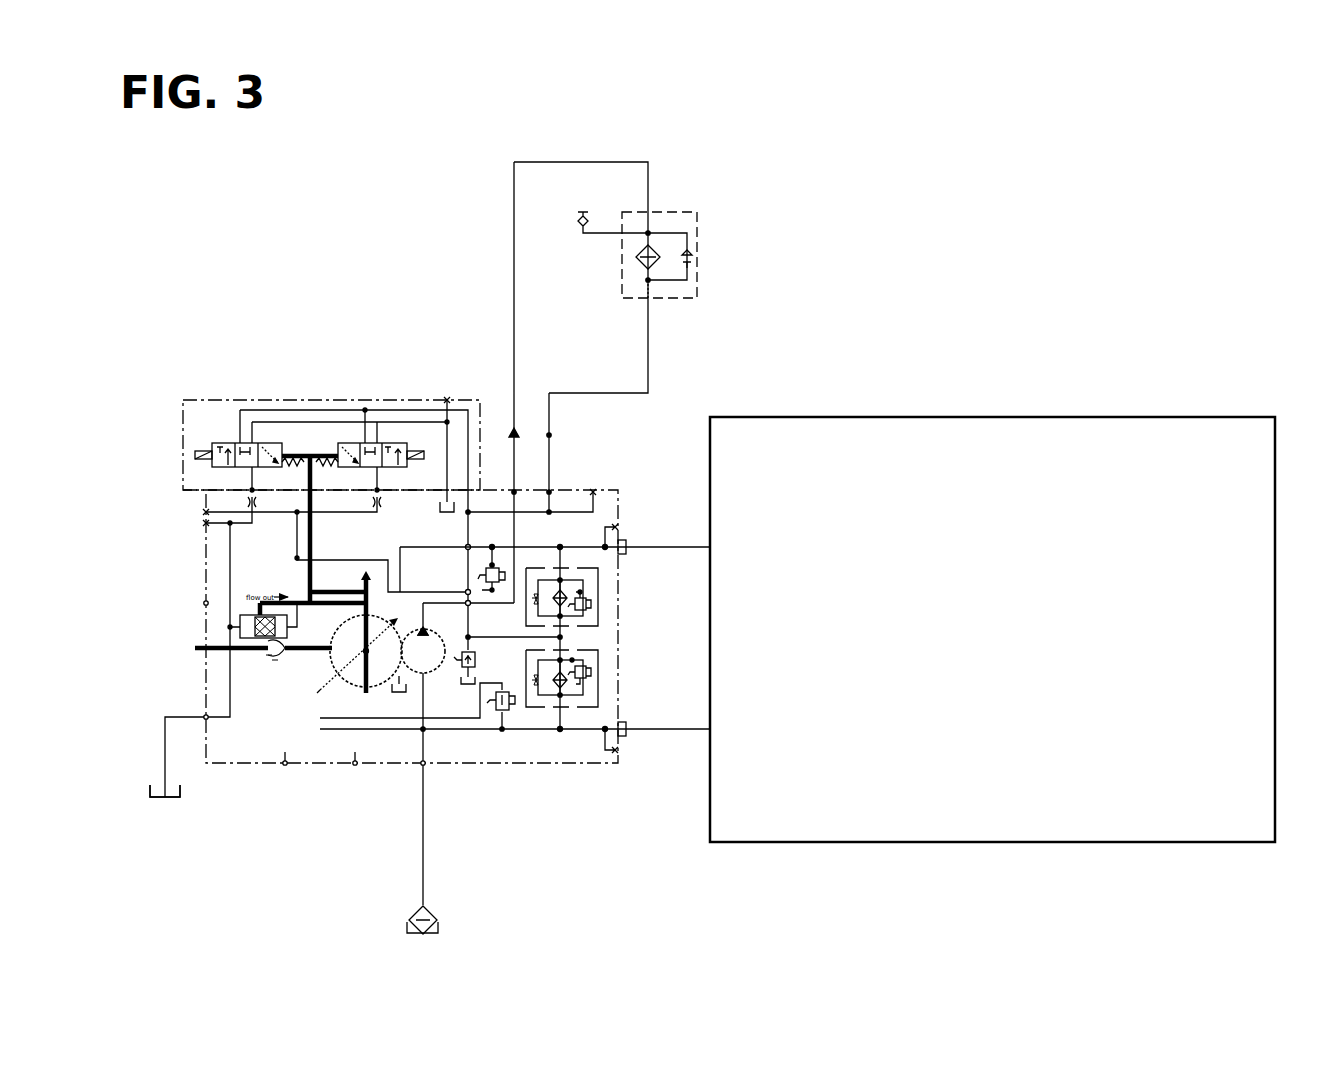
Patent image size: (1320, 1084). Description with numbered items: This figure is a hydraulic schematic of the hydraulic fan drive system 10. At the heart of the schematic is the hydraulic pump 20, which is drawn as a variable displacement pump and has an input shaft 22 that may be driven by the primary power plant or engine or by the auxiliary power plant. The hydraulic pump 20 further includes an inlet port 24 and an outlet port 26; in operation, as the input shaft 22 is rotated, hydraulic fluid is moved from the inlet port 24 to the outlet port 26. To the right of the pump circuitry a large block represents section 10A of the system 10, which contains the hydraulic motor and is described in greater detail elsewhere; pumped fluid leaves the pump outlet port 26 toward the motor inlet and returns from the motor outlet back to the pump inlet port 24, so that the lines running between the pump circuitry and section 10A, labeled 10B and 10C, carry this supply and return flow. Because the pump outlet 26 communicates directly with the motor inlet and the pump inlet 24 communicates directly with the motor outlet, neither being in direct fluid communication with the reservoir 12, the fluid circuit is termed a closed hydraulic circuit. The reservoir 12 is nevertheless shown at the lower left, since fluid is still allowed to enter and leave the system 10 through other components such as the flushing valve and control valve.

The hydraulic fan drive system 10 is at (250, 240).
The section of system 10A is at (975, 417).
The first working line 10B is at (710, 547).
The second working line 10C is at (710, 731).
The reservoir 12 is at (165, 797).
The hydraulic pump 20 is at (360, 682).
The input shaft 22 is at (195, 648).
The inlet port 24 is at (347, 667).
The outlet port 26 is at (390, 630).